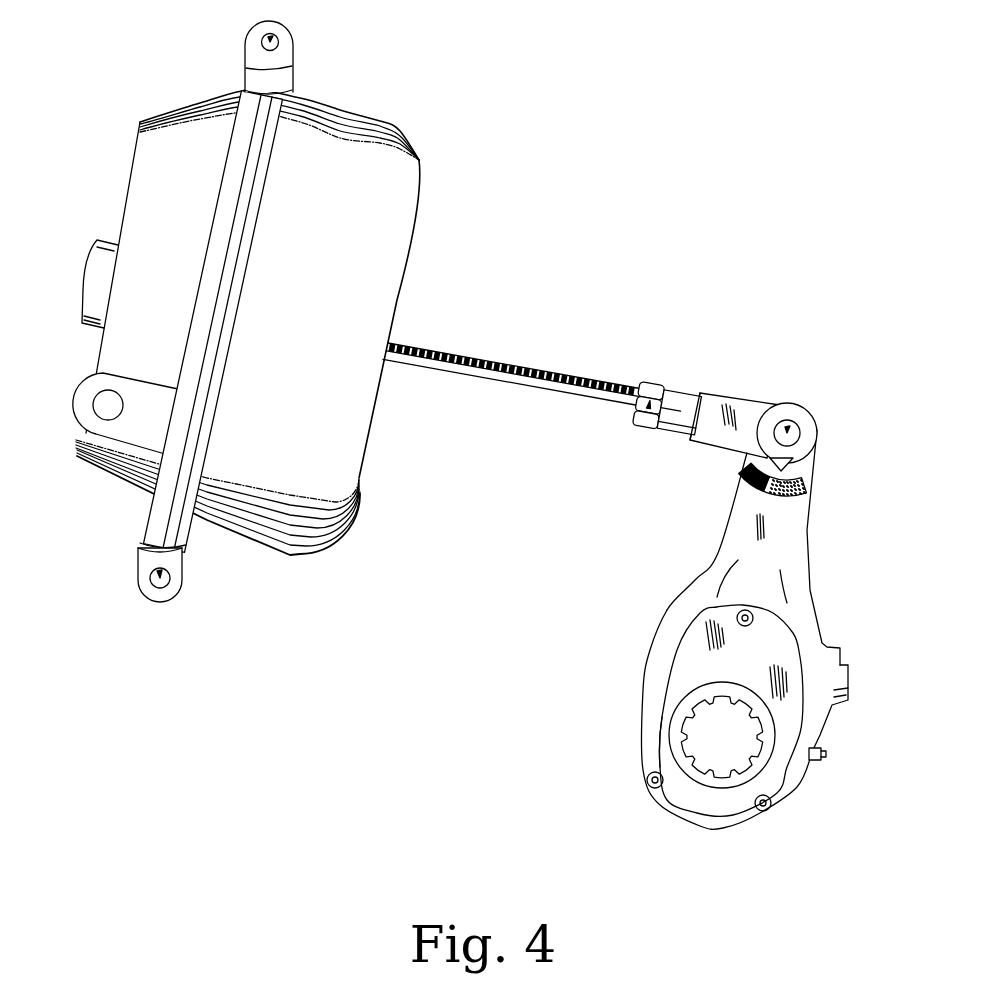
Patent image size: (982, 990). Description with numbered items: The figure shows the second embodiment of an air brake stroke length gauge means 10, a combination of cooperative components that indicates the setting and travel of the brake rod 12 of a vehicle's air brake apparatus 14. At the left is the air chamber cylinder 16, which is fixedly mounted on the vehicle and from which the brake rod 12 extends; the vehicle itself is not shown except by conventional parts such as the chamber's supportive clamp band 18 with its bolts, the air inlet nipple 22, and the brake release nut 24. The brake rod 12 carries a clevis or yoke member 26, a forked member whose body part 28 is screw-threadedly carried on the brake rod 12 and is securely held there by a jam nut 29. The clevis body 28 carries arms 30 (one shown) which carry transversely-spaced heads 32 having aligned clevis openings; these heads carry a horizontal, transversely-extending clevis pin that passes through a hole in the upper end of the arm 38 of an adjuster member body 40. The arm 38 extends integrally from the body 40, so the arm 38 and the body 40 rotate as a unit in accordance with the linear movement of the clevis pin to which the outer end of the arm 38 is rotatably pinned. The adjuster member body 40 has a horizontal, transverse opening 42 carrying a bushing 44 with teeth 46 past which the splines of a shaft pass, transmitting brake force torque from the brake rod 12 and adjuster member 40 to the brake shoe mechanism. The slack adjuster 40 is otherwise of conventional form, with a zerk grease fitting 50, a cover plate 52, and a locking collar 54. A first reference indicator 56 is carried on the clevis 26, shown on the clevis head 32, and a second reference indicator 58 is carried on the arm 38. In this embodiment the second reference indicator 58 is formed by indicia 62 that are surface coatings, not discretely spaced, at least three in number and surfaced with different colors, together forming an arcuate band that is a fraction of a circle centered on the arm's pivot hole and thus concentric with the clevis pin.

The air brake stroke length gauge means 10 is at (741, 586).
The brake rod 12 is at (416, 345).
The air brake apparatus 14 is at (293, 318).
The air chamber cylinder 16 is at (403, 168).
The clamp band 18 is at (252, 318).
The air inlet nipple 22 is at (102, 404).
The brake release nut 24 is at (88, 291).
The clevis 26 is at (708, 390).
The body part 28 is at (688, 398).
The jam nut 29 is at (657, 388).
The arms 30 is at (712, 438).
The heads 32 is at (794, 420).
The arm 38 is at (797, 553).
The adjuster member body 40 is at (662, 634).
The opening 42 is at (668, 752).
The bushing 44 is at (672, 735).
The teeth 46 is at (713, 777).
The zerk grease fitting 50 is at (826, 755).
The cover plate 52 is at (793, 657).
The locking collar 54 is at (846, 690).
The first reference indicator 56 is at (795, 463).
The second reference indicator 58 is at (748, 490).
The indicia 62 is at (797, 498).